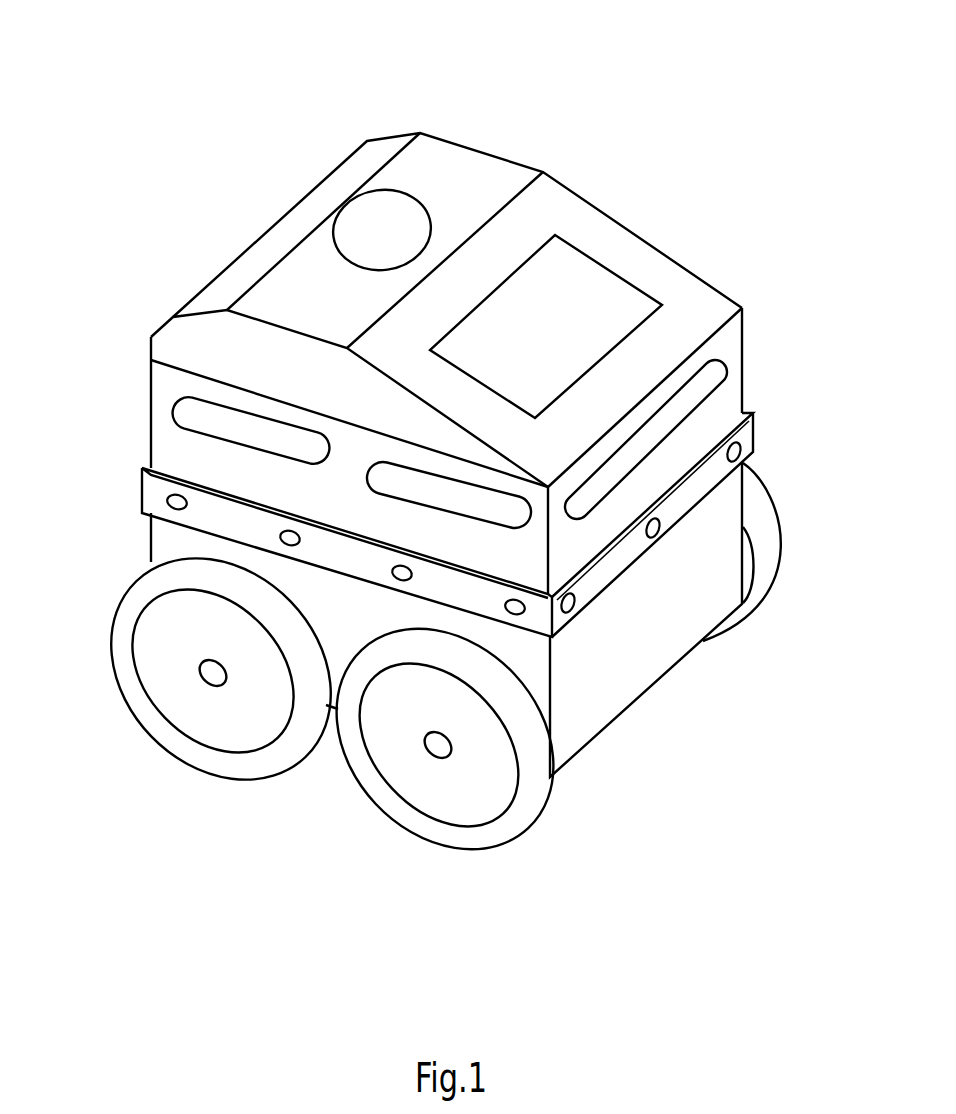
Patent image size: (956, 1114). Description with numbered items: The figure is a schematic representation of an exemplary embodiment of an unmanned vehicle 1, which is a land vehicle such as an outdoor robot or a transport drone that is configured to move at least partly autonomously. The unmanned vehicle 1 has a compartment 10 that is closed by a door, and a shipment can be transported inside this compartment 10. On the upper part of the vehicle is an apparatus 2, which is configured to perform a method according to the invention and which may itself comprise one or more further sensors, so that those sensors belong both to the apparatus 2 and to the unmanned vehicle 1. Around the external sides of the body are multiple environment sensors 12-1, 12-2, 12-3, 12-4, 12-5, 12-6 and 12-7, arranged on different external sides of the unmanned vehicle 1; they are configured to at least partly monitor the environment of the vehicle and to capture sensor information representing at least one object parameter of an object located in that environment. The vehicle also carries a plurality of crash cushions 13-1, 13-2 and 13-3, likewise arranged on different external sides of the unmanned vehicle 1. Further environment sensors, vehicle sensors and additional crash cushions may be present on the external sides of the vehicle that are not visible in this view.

The unmanned vehicle 1 is at (243, 129).
The apparatus 2 is at (403, 220).
The compartment 10 is at (580, 297).
The environment sensor 12-1 is at (741, 457).
The environment sensor 12-2 is at (656, 536).
The environment sensor 12-3 is at (570, 612).
The environment sensor 12-4 is at (515, 611).
The environment sensor 12-5 is at (402, 577).
The environment sensor 12-6 is at (290, 542).
The environment sensor 12-7 is at (172, 500).
The crash cushion 13-1 is at (712, 378).
The crash cushion 13-2 is at (473, 508).
The crash cushion 13-3 is at (193, 418).